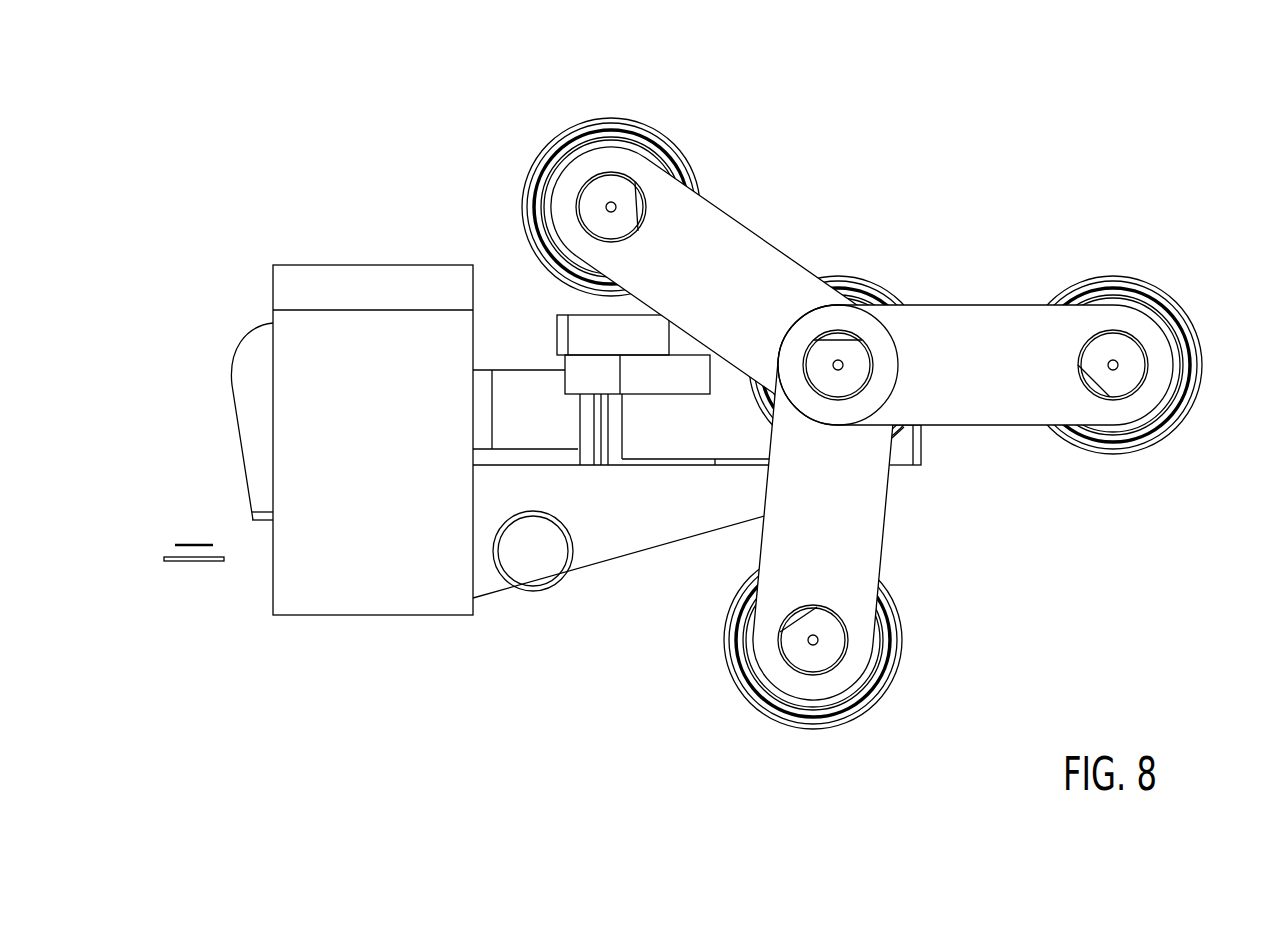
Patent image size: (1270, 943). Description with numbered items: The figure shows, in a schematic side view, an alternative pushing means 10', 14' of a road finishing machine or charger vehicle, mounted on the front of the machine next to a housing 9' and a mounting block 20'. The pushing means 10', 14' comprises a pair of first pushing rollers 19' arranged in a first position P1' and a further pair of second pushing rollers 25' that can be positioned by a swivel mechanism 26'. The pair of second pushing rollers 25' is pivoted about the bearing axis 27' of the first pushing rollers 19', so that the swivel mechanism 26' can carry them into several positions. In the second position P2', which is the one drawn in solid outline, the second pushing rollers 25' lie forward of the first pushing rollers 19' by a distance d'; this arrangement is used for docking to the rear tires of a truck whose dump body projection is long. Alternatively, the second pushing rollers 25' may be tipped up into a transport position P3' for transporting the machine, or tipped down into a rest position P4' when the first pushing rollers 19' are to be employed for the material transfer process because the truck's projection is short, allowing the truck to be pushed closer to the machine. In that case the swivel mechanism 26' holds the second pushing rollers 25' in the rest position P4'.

The drive unit housing 9' is at (318, 409).
The mounting block 20' is at (586, 299).
The pushing means 10' is at (862, 405).
The pushing means 14' is at (862, 405).
The first pushing rollers 19' is at (838, 331).
The second pushing rollers 25' is at (881, 422).
The swivel mechanism 26' is at (858, 502).
The bearing axis 27' is at (876, 321).
The first position P1' is at (838, 316).
The second position P2' is at (1132, 349).
The transport position P3' is at (611, 167).
The rest position P4' is at (813, 678).
The distance d' is at (975, 363).